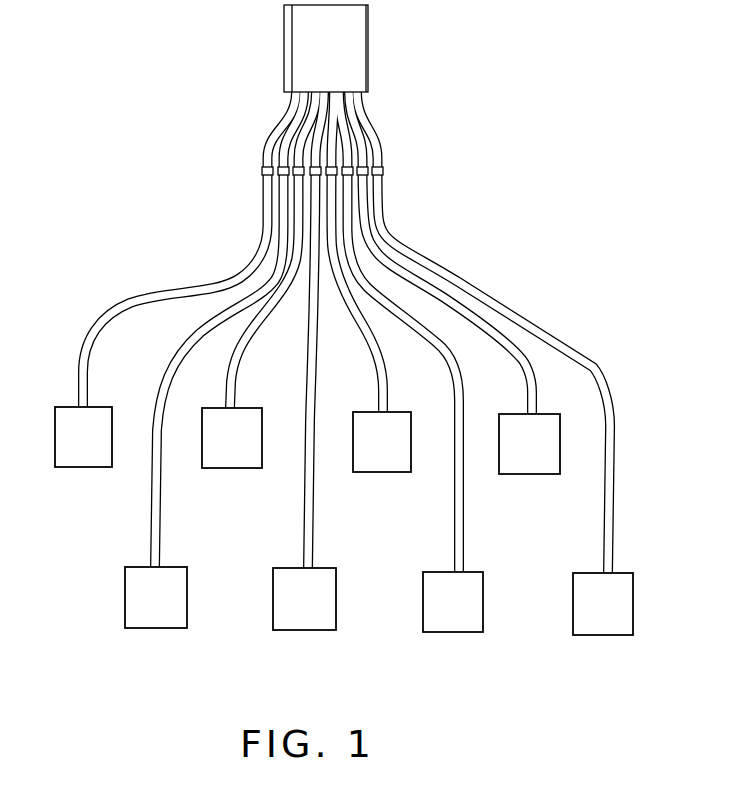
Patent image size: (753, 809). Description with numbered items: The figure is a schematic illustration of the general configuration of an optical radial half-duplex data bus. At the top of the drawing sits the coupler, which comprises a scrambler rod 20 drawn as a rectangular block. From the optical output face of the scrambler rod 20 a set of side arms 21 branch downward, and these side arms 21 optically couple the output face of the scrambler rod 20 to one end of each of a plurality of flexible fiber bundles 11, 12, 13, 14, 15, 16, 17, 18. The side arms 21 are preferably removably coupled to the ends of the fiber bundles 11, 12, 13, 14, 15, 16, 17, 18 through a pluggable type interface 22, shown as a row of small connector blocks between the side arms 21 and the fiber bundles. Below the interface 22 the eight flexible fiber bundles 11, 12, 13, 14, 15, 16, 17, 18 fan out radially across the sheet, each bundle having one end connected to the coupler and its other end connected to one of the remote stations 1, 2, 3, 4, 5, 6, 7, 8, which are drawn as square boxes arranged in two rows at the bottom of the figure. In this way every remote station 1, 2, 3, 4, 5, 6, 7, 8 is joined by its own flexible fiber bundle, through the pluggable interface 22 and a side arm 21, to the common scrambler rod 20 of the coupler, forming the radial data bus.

The scrambler rod 20 is at (345, 53).
The side arms 21 is at (378, 136).
The pluggable type interface 22 is at (262, 170).
The flexible fiber bundle 11 is at (125, 302).
The flexible fiber bundle 12 is at (238, 385).
The flexible fiber bundle 13 is at (388, 383).
The flexible fiber bundle 14 is at (538, 388).
The flexible fiber bundle 15 is at (172, 364).
The flexible fiber bundle 16 is at (316, 410).
The flexible fiber bundle 17 is at (464, 386).
The flexible fiber bundle 18 is at (586, 352).
The remote station 1 is at (83, 437).
The remote station 2 is at (232, 438).
The remote station 3 is at (382, 442).
The remote station 4 is at (529, 444).
The remote station 5 is at (156, 597).
The remote station 6 is at (304, 599).
The remote station 7 is at (453, 602).
The remote station 8 is at (603, 604).